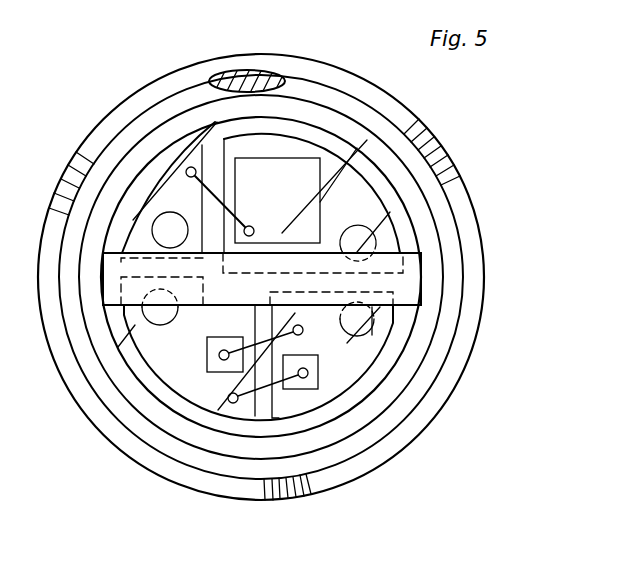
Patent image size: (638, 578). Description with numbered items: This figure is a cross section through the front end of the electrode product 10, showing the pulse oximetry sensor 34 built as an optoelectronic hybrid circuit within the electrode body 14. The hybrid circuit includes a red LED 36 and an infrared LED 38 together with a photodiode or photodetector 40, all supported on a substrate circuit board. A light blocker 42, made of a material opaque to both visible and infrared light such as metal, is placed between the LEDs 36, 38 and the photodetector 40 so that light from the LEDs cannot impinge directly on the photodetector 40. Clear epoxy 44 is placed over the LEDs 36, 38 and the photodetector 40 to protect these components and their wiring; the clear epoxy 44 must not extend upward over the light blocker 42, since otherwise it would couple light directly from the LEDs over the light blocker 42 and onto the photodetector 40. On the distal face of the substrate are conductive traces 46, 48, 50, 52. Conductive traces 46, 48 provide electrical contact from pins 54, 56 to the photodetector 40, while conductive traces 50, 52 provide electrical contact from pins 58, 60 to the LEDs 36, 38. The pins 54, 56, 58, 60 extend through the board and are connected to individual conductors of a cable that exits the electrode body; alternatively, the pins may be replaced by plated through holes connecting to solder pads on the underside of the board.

The hatched slot 10 is at (237, 70).
The outer housing ring 14 is at (420, 127).
The pulse oximetry sensor 34 is at (372, 136).
The red LED 36 is at (207, 350).
The infrared LED 38 is at (310, 363).
The photodetector 40 is at (238, 200).
The light blocker 42 is at (413, 288).
The clear epoxy 44 is at (350, 192).
The conductive trace 46 is at (160, 162).
The conductive trace 48 is at (267, 155).
The conductive trace 50 is at (357, 385).
The conductive trace 52 is at (190, 400).
The pin 54 is at (160, 225).
The pin 56 is at (390, 212).
The pin 58 is at (143, 327).
The pin 60 is at (372, 333).